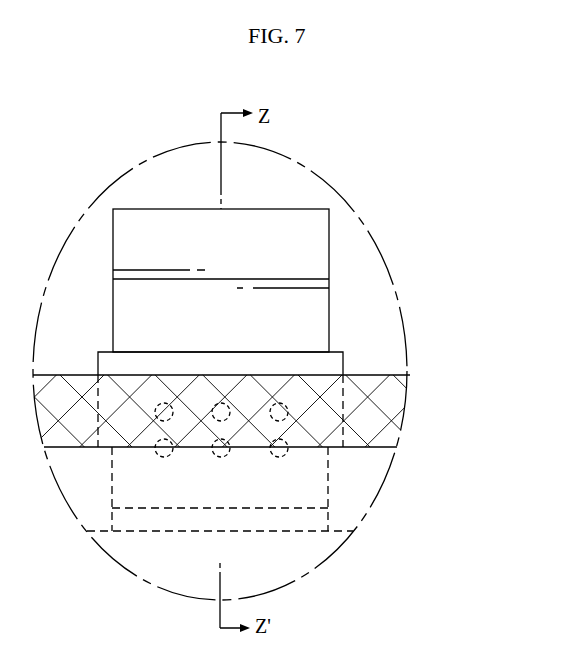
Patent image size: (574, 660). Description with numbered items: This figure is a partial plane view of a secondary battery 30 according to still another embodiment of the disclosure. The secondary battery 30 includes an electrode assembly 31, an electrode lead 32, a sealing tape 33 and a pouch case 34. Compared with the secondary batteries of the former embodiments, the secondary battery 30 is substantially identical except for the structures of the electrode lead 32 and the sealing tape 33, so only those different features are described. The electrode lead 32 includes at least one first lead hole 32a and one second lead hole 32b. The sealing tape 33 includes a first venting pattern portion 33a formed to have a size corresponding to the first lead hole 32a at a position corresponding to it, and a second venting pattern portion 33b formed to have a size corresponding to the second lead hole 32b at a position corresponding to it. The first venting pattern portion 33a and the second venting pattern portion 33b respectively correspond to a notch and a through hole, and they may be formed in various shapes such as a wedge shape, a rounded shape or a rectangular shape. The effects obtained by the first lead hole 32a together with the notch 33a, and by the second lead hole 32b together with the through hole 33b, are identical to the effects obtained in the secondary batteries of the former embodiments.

The secondary battery 30 is at (350, 147).
The electrode assembly 31 is at (320, 552).
The electrode lead 32 is at (322, 225).
The first lead hole 32a is at (283, 453).
The second lead hole 32b is at (339, 403).
The sealing tape 33 is at (343, 352).
The first venting pattern portion 33a is at (312, 458).
The second venting pattern portion 33b is at (282, 405).
The pouch case 34 is at (387, 375).